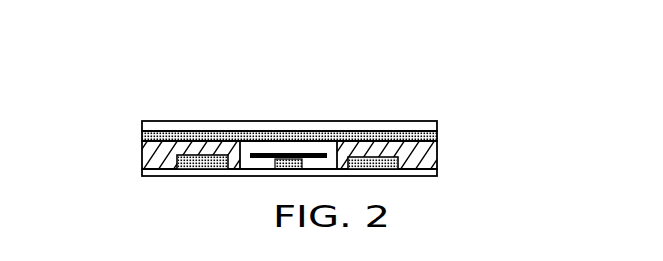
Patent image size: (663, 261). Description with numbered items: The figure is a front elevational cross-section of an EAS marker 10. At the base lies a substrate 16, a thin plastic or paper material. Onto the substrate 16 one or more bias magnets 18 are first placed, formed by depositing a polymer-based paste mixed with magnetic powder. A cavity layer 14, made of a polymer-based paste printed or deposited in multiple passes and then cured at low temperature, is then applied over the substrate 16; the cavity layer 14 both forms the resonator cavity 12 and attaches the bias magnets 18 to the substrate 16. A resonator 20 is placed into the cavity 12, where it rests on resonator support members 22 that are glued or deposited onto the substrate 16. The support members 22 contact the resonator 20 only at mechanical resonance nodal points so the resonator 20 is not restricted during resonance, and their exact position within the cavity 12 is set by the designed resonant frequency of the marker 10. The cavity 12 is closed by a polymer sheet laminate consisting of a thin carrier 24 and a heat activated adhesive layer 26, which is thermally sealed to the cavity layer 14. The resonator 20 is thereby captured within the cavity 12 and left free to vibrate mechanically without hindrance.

The EAS marker 10 is at (343, 82).
The resonator cavity 12 is at (291, 152).
The cavity layer 14 is at (153, 152).
The substrate 16 is at (437, 175).
The bias magnets 18 is at (185, 155).
The resonator 20 is at (246, 152).
The resonator support members 22 is at (283, 164).
The thin carrier 24 is at (437, 122).
The heat activated adhesive layer 26 is at (437, 137).